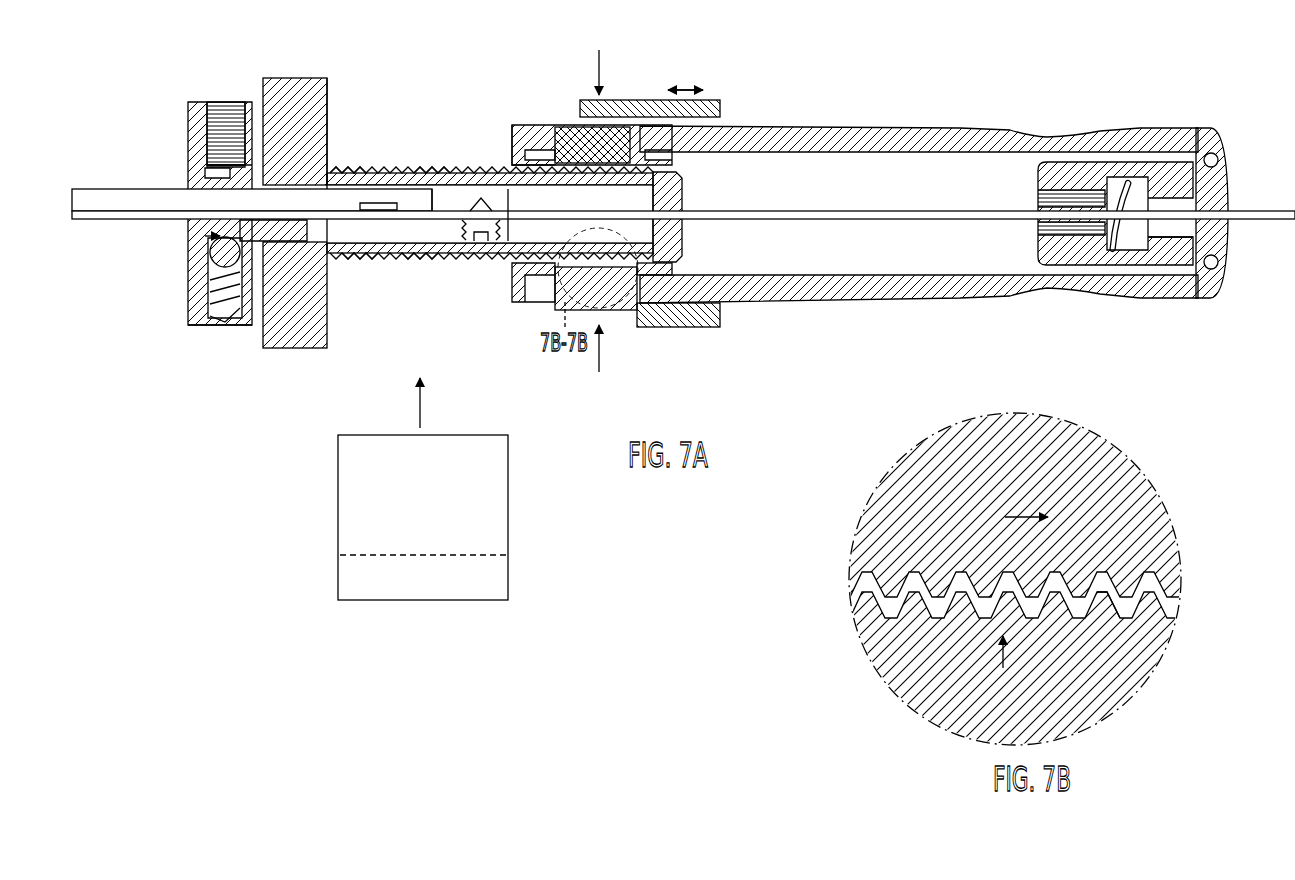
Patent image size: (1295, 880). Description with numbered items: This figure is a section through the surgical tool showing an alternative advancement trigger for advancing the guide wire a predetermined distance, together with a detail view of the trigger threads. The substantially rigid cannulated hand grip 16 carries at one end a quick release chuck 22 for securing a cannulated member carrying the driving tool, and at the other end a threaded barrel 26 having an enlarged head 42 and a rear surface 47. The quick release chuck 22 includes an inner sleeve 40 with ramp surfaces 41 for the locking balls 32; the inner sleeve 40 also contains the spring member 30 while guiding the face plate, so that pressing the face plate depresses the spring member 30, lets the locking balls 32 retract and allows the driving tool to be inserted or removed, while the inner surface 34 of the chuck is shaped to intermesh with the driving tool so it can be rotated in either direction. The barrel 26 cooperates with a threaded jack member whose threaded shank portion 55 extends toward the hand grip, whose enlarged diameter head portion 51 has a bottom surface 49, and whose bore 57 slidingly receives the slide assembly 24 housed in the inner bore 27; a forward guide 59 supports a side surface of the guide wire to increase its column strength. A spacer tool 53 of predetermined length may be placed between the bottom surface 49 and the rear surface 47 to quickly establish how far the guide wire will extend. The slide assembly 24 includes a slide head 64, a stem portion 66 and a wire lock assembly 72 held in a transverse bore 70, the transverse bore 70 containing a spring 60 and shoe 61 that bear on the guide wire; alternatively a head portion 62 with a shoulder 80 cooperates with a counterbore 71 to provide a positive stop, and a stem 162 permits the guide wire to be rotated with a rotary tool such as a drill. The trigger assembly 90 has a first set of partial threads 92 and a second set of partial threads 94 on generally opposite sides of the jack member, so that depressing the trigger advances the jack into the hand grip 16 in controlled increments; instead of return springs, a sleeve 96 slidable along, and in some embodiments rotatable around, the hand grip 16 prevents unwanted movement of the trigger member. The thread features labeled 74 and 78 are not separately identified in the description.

In FIG. 7A, the hand grip 16 is at (770, 126).
In FIG. 7A, the quick release chuck 22 is at (1216, 130).
In FIG. 7A, the slide assembly 24 is at (190, 108).
In FIG. 7A, the threaded barrel 26 is at (540, 148).
In FIG. 7A, the inner bore 27 is at (340, 168).
In FIG. 7A, the spring member 30 is at (1118, 195).
In FIG. 7A, the locking balls 32 is at (1205, 152).
In FIG. 7A, the inner surface 34 is at (1225, 188).
In FIG. 7A, the inner sleeve 40 is at (1070, 266).
In FIG. 7A, the ramp surfaces 41 is at (1160, 250).
In FIG. 7A, the enlarged head 42 is at (515, 300).
In FIG. 7A, the rear surface 47 is at (505, 145).
In FIG. 7A, the bottom surface 49 is at (328, 108).
In FIG. 7A, the enlarged diameter head portion 51 is at (300, 78).
In FIG. 7A, the spacer tool 53 is at (508, 580).
In FIG. 7A, the threaded shank portion 55 is at (386, 262).
In FIG. 7B, the threaded shank portion 55 is at (1059, 494).
In FIG. 7A, the bore 57 is at (530, 190).
In FIG. 7A, the forward guide 59 is at (680, 235).
In FIG. 7A, the spring 60 is at (215, 258).
In FIG. 7A, the shoe 61 is at (212, 237).
In FIG. 7A, the head portion 62 is at (190, 178).
In FIG. 7A, the slide head 64 is at (192, 322).
In FIG. 7A, the stem portion 66 is at (352, 262).
In FIG. 7A, the transverse bore 70 is at (216, 101).
In FIG. 7A, the counterbore 71 is at (195, 165).
In FIG. 7A, the wire lock assembly 72 is at (185, 225).
In FIG. 7A, the threads 74 is at (428, 167).
In FIG. 7A, the threads 78 is at (416, 262).
In FIG. 7A, the shoulder 80 is at (205, 148).
In FIG. 7A, the trigger assembly 90 is at (620, 310).
In FIG. 7B, the trigger assembly 90 is at (1073, 677).
In FIG. 7A, the first set of partial threads 92 is at (660, 290).
In FIG. 7B, the first set of partial threads 92 is at (1113, 615).
In FIG. 7A, the second set of partial threads 94 is at (633, 165).
In FIG. 7A, the sleeve 96 is at (722, 103).
In FIG. 7A, the stem 162 is at (95, 213).